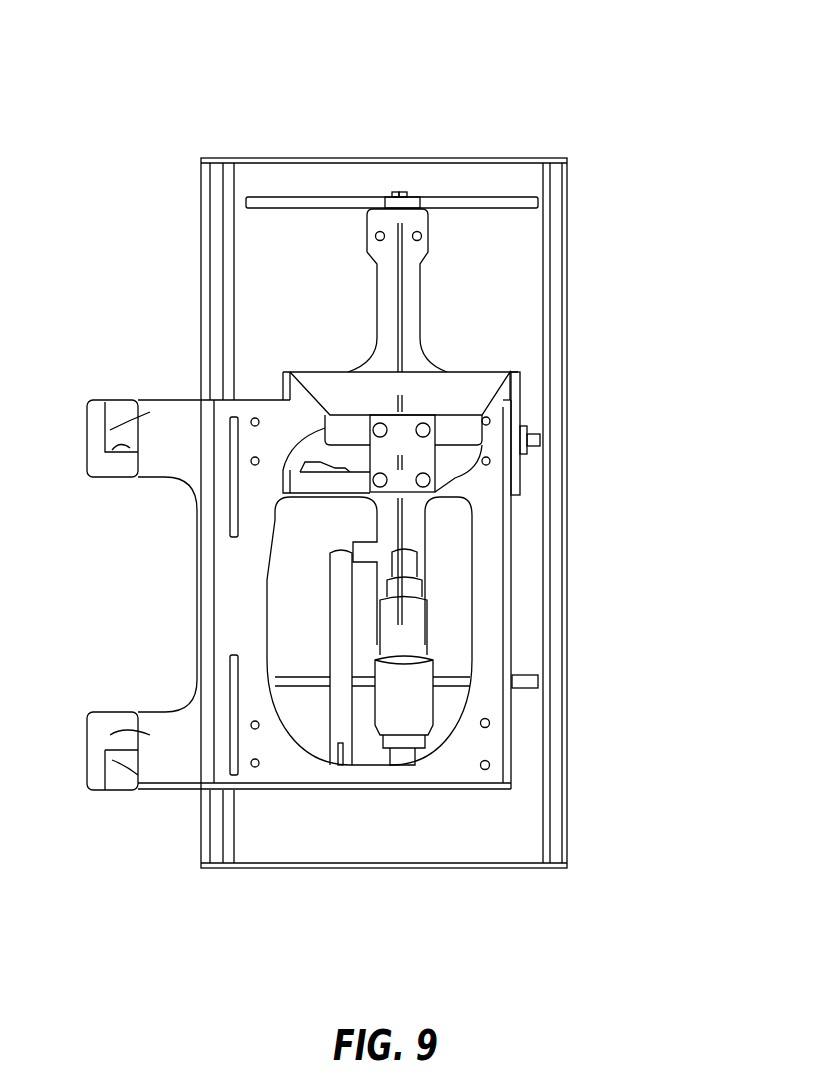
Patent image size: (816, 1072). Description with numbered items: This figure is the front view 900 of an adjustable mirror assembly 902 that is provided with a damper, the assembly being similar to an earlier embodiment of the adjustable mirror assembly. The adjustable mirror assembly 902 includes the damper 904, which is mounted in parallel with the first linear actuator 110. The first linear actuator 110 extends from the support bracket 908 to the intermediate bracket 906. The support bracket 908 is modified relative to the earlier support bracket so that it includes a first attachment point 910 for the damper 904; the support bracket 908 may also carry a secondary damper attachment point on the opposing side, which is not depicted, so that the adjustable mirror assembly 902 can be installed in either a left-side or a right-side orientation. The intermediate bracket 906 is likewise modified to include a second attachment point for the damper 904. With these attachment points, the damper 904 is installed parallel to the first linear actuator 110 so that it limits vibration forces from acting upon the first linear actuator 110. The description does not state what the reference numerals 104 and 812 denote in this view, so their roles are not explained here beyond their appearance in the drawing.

The front view 900 is at (137, 76).
The adjustable mirror assembly 902 is at (578, 186).
The support wall 104 is at (250, 254).
The intermediate bracket 906 is at (410, 300).
The cylinder 812 is at (305, 543).
The damper 904 is at (267, 619).
The first linear actuator 110 is at (418, 620).
The support bracket 908 is at (490, 723).
The first attachment point 910 is at (345, 734).